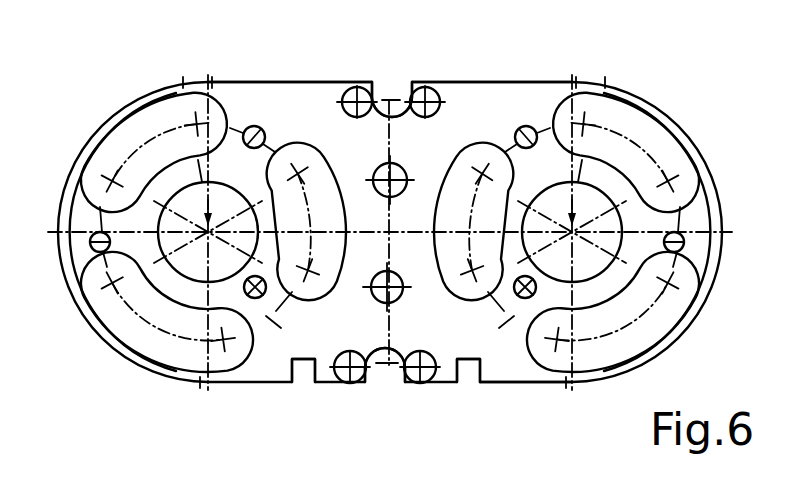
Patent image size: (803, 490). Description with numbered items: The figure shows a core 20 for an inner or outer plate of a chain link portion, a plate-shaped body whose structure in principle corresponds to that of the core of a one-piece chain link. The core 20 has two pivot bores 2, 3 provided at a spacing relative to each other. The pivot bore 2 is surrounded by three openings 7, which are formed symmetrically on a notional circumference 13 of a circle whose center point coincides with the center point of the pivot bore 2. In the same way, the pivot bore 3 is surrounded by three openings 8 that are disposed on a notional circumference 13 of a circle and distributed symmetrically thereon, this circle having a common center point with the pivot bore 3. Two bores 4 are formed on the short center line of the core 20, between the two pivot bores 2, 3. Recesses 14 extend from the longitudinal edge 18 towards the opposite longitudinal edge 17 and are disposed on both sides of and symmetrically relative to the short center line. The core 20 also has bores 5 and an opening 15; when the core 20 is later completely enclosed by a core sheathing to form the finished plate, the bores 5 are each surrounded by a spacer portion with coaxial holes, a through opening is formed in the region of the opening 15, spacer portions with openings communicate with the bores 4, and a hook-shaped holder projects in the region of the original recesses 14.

The pivot bore 2 is at (556, 183).
The pivot bore 3 is at (160, 228).
The bores 4 is at (391, 233).
The bores 5 is at (358, 85).
The openings 7 is at (630, 120).
The openings 8 is at (130, 130).
The notional circumference of a circle 13 is at (680, 218).
The recesses 14 is at (307, 373).
The opening 15 is at (386, 84).
The longitudinal edge 17 is at (223, 82).
The longitudinal edge 18 is at (551, 385).
The core 20 is at (497, 98).